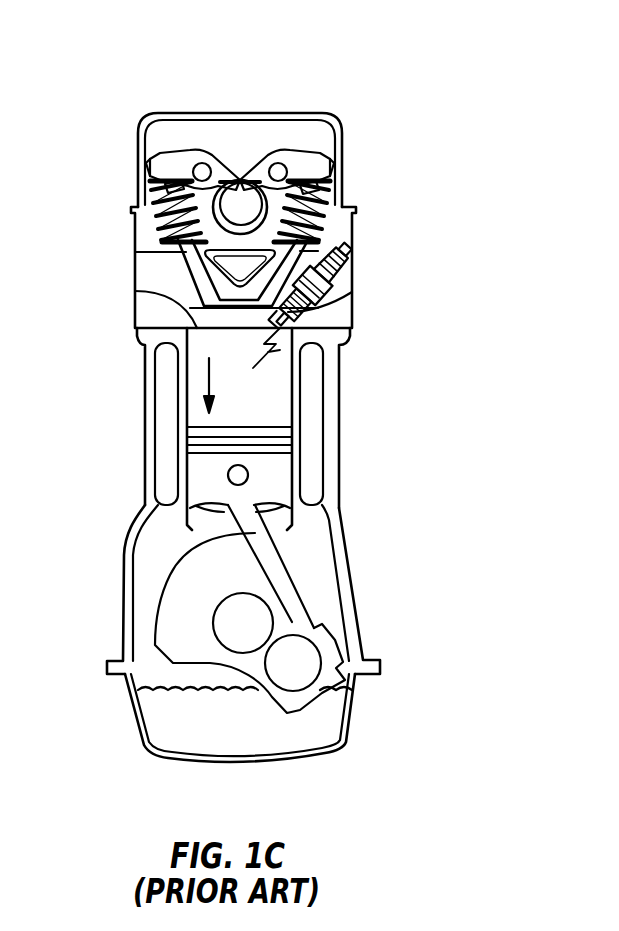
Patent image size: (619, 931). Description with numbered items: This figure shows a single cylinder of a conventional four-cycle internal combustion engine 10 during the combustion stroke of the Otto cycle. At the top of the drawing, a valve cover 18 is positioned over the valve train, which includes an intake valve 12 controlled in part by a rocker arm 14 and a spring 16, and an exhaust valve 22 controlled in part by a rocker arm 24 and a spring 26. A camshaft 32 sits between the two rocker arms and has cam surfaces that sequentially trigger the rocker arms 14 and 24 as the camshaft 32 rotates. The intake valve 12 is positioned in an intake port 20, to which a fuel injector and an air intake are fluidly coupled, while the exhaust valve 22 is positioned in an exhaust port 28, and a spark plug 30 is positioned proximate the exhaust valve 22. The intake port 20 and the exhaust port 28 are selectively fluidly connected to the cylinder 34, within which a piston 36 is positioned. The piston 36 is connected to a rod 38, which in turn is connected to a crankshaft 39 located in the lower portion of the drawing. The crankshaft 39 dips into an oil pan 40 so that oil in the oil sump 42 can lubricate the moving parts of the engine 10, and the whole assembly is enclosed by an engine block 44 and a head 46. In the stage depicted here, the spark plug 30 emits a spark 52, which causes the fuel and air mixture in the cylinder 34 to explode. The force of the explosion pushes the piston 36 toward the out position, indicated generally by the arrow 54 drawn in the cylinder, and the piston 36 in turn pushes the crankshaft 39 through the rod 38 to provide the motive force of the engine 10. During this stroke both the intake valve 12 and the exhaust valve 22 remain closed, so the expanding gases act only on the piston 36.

The internal combustion engine 10 is at (444, 111).
The intake valve 12 is at (170, 196).
The rocker arm 14 is at (192, 158).
The spring 16 is at (170, 231).
The valve cover 18 is at (317, 116).
The intake port 20 is at (129, 263).
The exhaust valve 22 is at (316, 192).
The rocker arm 24 is at (280, 154).
The spring 26 is at (315, 214).
The exhaust port 28 is at (340, 285).
The spark plug 30 is at (350, 252).
The camshaft 32 is at (237, 205).
The cylinder 34 is at (280, 403).
The piston 36 is at (267, 427).
The rod 38 is at (278, 566).
The crankshaft 39 is at (262, 617).
The oil pan 40 is at (137, 728).
The oil sump 42 is at (303, 727).
The engine block 44 is at (123, 557).
The head 46 is at (157, 312).
The spark 52 is at (336, 337).
The arrow 54 is at (213, 376).